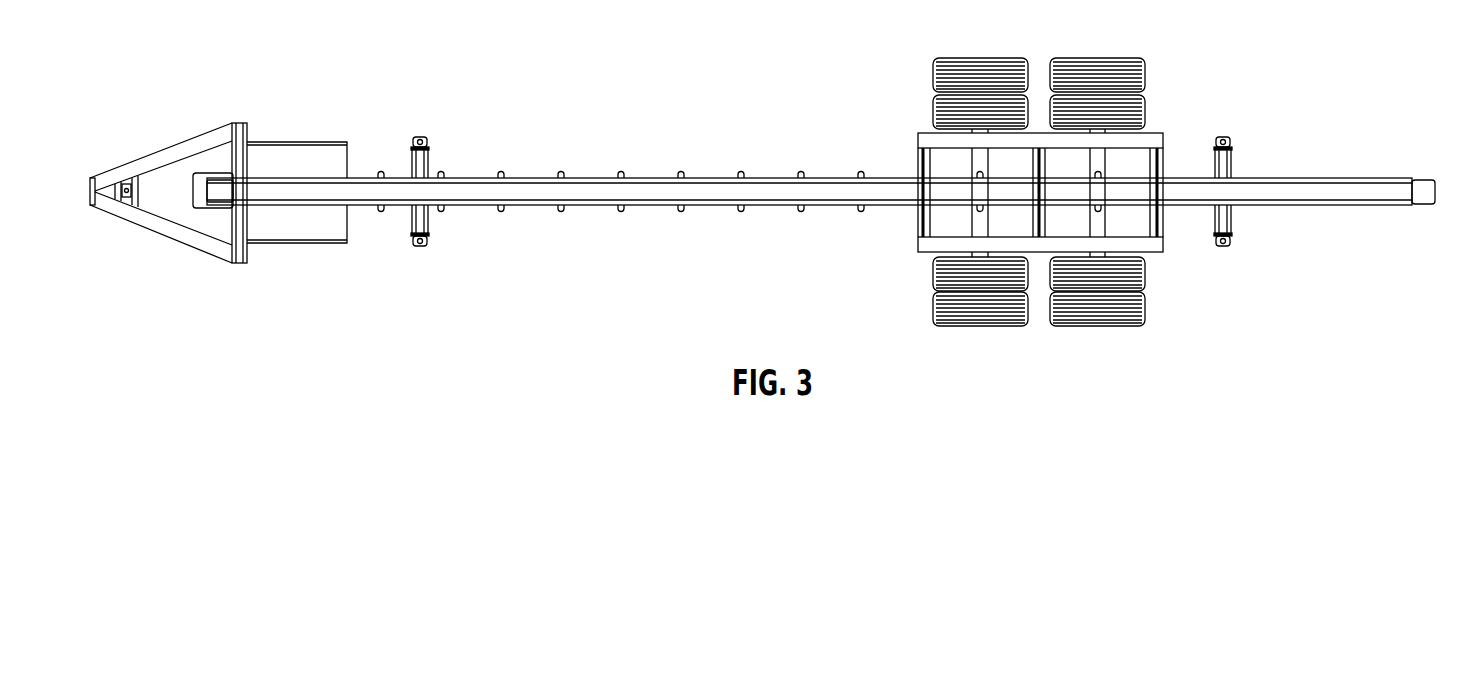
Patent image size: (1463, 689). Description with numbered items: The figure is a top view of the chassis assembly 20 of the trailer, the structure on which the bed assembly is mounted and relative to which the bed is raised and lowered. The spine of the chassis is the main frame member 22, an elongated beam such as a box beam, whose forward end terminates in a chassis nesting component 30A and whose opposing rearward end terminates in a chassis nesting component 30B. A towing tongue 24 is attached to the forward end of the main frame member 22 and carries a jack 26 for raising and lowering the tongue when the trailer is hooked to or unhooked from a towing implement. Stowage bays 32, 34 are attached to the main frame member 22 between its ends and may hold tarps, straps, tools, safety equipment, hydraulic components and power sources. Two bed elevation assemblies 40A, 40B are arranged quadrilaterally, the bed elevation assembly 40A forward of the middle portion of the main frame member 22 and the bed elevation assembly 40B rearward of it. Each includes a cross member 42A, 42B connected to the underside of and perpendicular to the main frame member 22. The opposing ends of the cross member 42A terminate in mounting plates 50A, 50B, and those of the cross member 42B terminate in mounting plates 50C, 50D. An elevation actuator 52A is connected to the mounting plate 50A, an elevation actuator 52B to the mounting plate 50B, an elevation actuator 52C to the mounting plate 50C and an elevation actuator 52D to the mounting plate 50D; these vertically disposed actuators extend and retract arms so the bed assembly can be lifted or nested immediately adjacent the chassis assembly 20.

The chassis assembly 20 is at (873, 52).
The main frame member 22 is at (1350, 183).
The towing tongue 24 is at (188, 147).
The jack 26 is at (123, 190).
The chassis nesting component 30A is at (220, 198).
The chassis nesting component 30B is at (1420, 183).
The stowage bay 32 is at (325, 233).
The stowage bay 34 is at (318, 148).
The bed elevation assembly 40A is at (437, 192).
The bed elevation assembly 40B is at (1241, 193).
The cross member 42A is at (428, 210).
The cross member 42B is at (1232, 210).
The mounting plate 50A is at (430, 235).
The mounting plate 50B is at (411, 148).
The mounting plate 50C is at (1235, 235).
The mounting plate 50D is at (1214, 148).
The elevation actuator 52A is at (418, 246).
The elevation actuator 52B is at (419, 137).
The elevation actuator 52C is at (1222, 248).
The elevation actuator 52D is at (1223, 137).